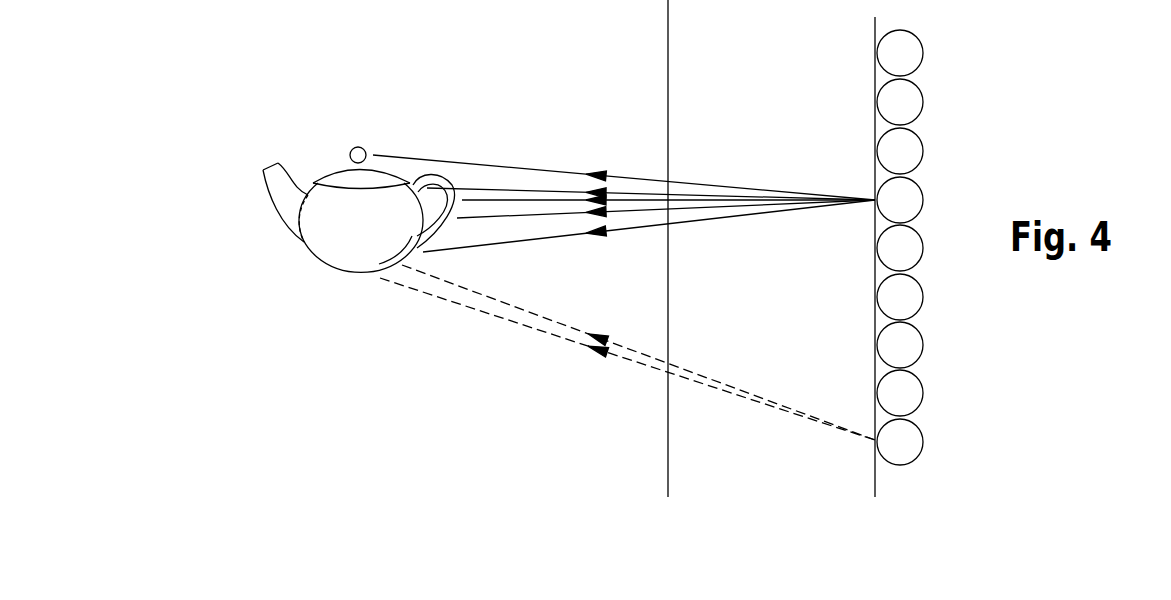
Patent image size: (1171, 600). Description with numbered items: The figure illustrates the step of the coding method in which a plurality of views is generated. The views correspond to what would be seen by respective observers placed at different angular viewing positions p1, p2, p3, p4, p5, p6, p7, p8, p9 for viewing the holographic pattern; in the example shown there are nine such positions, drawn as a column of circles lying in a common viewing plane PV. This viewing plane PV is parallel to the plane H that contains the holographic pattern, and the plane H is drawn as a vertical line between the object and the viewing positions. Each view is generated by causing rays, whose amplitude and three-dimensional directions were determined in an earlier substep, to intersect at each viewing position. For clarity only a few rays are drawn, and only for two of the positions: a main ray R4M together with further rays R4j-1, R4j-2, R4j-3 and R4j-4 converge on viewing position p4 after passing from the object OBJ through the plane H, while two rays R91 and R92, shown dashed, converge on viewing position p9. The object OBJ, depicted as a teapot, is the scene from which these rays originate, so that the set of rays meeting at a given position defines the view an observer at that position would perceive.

The ray R4M is at (405, 157).
The ray R4j-1 is at (505, 183).
The ray R4j-2 is at (542, 194).
The ray R4j-3 is at (557, 217).
The ray R4j-4 is at (493, 246).
The ray R91 is at (443, 299).
The ray R92 is at (563, 324).
The object (teapot) OBJ is at (338, 240).
The plane H is at (668, 264).
The viewing plane PV is at (873, 272).
The viewing position p1 is at (900, 53).
The viewing position p2 is at (900, 102).
The viewing position p3 is at (900, 151).
The viewing position p4 is at (900, 200).
The viewing position p5 is at (900, 248).
The viewing position p6 is at (900, 297).
The viewing position p7 is at (900, 345).
The viewing position p8 is at (900, 393).
The viewing position p9 is at (900, 442).